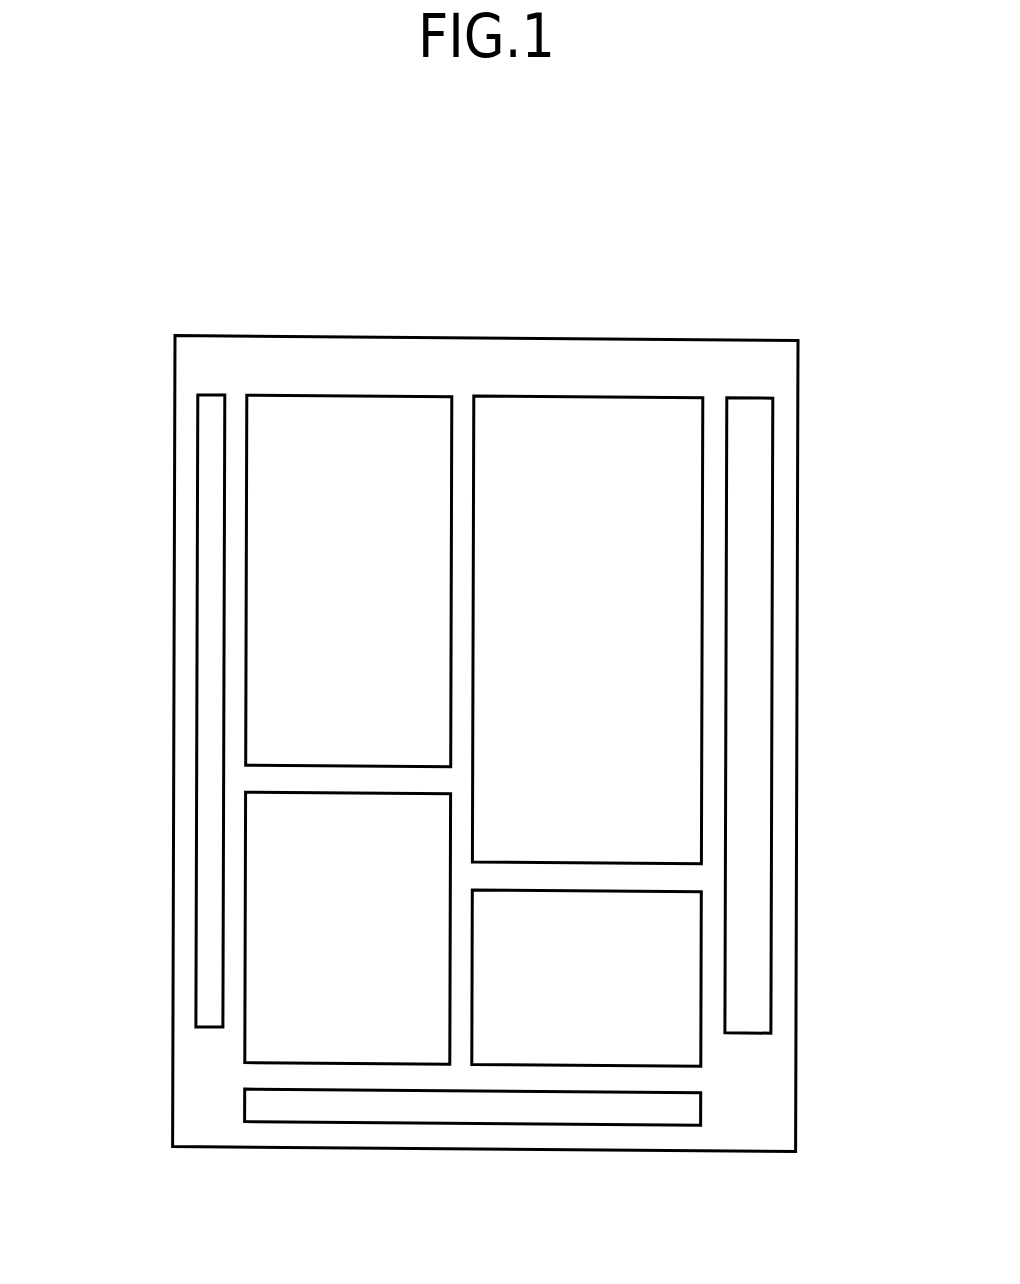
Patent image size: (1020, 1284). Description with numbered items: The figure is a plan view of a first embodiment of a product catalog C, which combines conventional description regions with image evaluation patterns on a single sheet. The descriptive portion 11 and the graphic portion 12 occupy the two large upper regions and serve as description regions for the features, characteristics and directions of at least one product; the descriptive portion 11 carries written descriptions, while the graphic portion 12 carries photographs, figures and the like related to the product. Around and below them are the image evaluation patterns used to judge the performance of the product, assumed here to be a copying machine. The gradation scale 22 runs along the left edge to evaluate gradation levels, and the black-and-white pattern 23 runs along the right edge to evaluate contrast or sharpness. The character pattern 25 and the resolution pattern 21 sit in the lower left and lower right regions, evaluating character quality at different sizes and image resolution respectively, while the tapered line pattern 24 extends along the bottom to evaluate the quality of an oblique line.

The product catalog C is at (740, 320).
The descriptive portion 11 is at (348, 397).
The graphic portion 12 is at (603, 398).
The resolution pattern 21 is at (700, 1053).
The gradation scale 22 is at (198, 426).
The black-and-white pattern 23 is at (780, 430).
The tapered line pattern 24 is at (372, 1122).
The character pattern 25 is at (245, 1052).